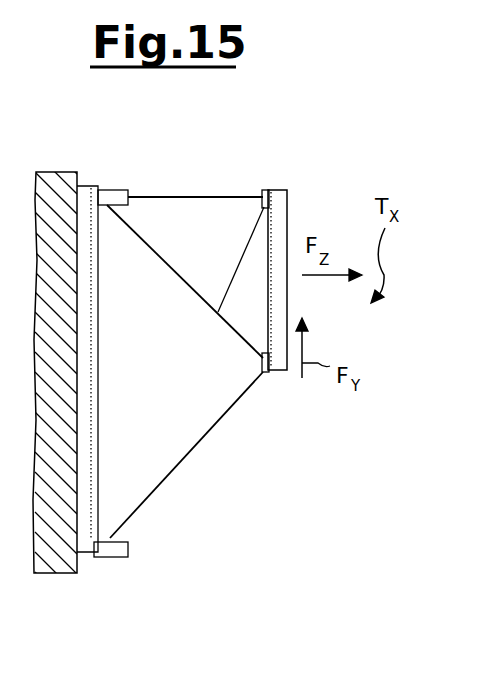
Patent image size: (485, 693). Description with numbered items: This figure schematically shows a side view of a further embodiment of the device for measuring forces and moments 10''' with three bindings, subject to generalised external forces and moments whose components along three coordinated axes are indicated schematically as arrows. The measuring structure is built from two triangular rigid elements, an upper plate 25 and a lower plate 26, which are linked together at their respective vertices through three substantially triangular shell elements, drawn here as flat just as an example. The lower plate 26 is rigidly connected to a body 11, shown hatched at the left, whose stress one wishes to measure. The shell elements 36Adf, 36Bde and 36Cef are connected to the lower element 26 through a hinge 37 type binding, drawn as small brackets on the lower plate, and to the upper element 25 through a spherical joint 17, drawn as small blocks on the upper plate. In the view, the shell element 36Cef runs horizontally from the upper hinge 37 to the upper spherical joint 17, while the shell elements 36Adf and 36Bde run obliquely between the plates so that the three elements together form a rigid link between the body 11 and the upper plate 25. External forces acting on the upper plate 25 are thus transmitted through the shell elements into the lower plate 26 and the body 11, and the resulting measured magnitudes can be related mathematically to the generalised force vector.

The body 11 is at (56, 195).
The lower plate 26 is at (91, 540).
The hinge 37 is at (112, 196).
The upper plate 25 is at (290, 223).
The spherical joint 17 is at (265, 190).
The shell element 36Cef is at (190, 195).
The shell element 36Adf is at (222, 239).
The shell element 36Bde is at (208, 379).
The device for measuring forces and moments 10''' is at (360, 119).